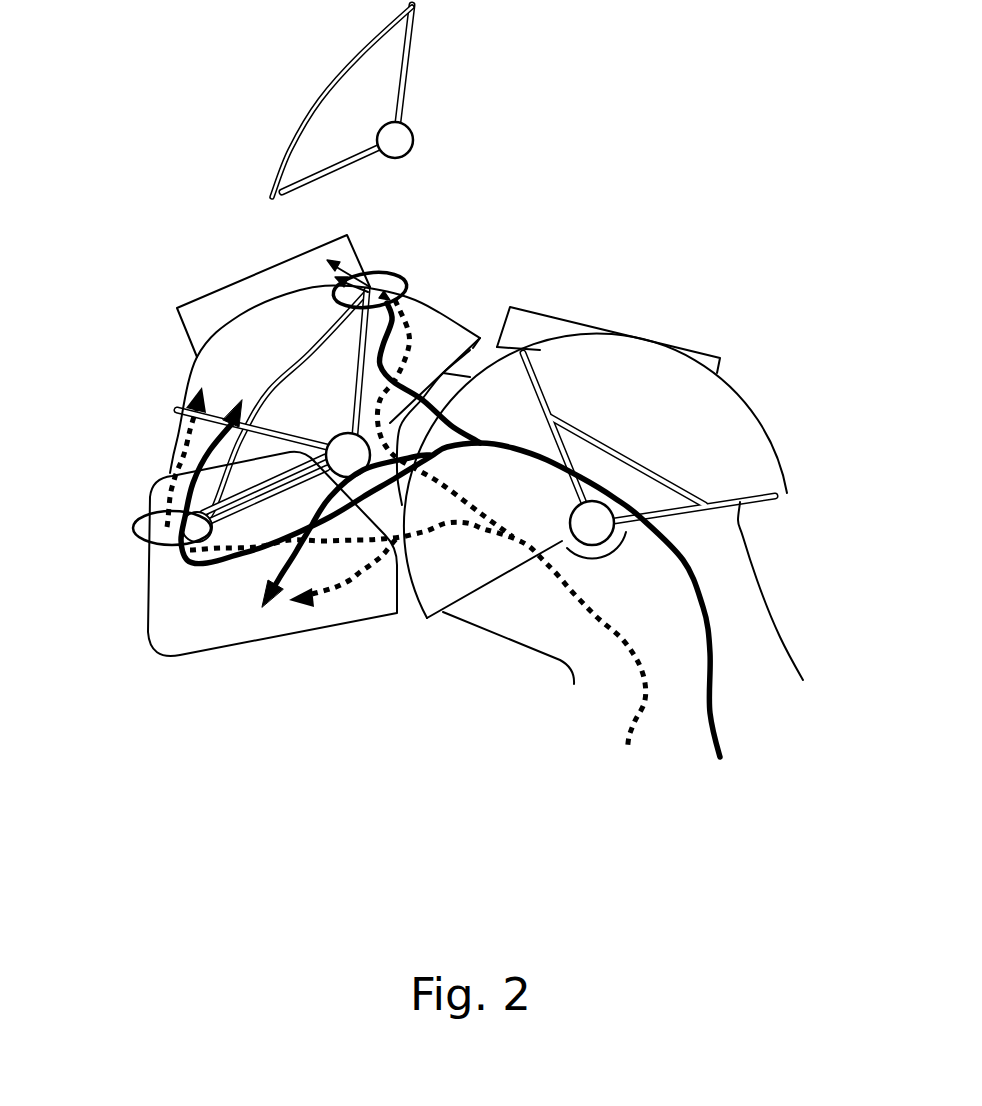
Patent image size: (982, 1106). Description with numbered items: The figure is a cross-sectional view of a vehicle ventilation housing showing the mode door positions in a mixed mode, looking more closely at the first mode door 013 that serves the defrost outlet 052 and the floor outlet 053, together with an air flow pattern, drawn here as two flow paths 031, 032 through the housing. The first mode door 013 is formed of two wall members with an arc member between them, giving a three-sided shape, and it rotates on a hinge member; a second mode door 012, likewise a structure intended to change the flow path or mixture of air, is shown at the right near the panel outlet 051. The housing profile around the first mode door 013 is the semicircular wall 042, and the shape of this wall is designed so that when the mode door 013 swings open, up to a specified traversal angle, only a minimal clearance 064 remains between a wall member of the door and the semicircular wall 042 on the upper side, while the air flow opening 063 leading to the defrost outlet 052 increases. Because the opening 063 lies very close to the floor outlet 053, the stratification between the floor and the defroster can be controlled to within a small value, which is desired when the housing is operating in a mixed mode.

The second mode door 012 is at (585, 533).
The first mode door 013 is at (400, 139).
The first movement path (dashed) 031 is at (633, 688).
The second movement path (solid) 032 is at (727, 718).
The semicircular wall of the ventilation housing 042 is at (448, 303).
The panel outlet 051 is at (683, 348).
The defrost outlet 052 is at (230, 289).
The floor outlet 053 is at (197, 623).
The air flow opening 063 is at (162, 507).
The clearance 064 is at (393, 275).